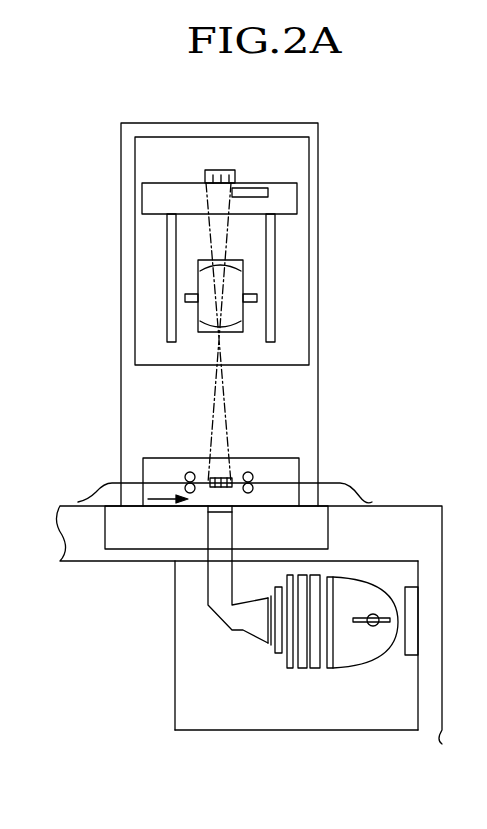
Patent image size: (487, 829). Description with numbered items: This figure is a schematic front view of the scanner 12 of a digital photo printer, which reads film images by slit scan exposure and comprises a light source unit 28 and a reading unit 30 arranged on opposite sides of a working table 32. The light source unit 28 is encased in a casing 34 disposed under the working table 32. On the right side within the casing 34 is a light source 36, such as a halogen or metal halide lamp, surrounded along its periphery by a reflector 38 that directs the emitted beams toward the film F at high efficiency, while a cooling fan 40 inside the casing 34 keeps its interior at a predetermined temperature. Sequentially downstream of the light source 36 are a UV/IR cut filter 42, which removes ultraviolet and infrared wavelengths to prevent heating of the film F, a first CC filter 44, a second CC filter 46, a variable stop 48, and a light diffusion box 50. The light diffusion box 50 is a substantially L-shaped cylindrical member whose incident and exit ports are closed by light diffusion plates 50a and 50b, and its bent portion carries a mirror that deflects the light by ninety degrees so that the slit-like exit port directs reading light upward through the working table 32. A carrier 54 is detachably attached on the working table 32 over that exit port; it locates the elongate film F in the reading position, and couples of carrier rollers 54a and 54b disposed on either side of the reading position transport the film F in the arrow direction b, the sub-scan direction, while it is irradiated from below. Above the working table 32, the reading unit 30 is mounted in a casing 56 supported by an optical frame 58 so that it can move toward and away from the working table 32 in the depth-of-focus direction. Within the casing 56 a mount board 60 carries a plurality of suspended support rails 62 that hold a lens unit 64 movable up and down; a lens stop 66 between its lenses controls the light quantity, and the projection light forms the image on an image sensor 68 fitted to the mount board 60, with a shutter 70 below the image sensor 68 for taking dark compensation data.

The scanner 12 is at (358, 107).
The light source unit 28 is at (193, 690).
The reading unit 30 is at (143, 338).
The working table 32 is at (420, 506).
The casing 34 is at (182, 732).
The light source 36 is at (375, 627).
The reflector 38 is at (355, 670).
The cooling fan 40 is at (412, 655).
The UV/IR cut filter 42 is at (316, 669).
The first CC filter 44 is at (300, 669).
The second CC filter 46 is at (290, 669).
The variable stop 48 is at (278, 654).
The light diffusion box 50 is at (220, 624).
The light diffusion plate 50a is at (268, 645).
The light diffusion plate 50b is at (207, 515).
The carrier 54 is at (300, 458).
The carrier roller 54a is at (184, 472).
The carrier roller 54b is at (250, 493).
The casing 56 is at (310, 273).
The optical frame 58 is at (318, 330).
The mount board 60 is at (142, 197).
The support rails 62 is at (167, 235).
The lens unit 64 is at (243, 328).
The lens stop 66 is at (185, 297).
The image sensor 68 is at (224, 170).
The shutter 70 is at (268, 193).
The film F is at (96, 493).
The arrow direction b is at (168, 497).